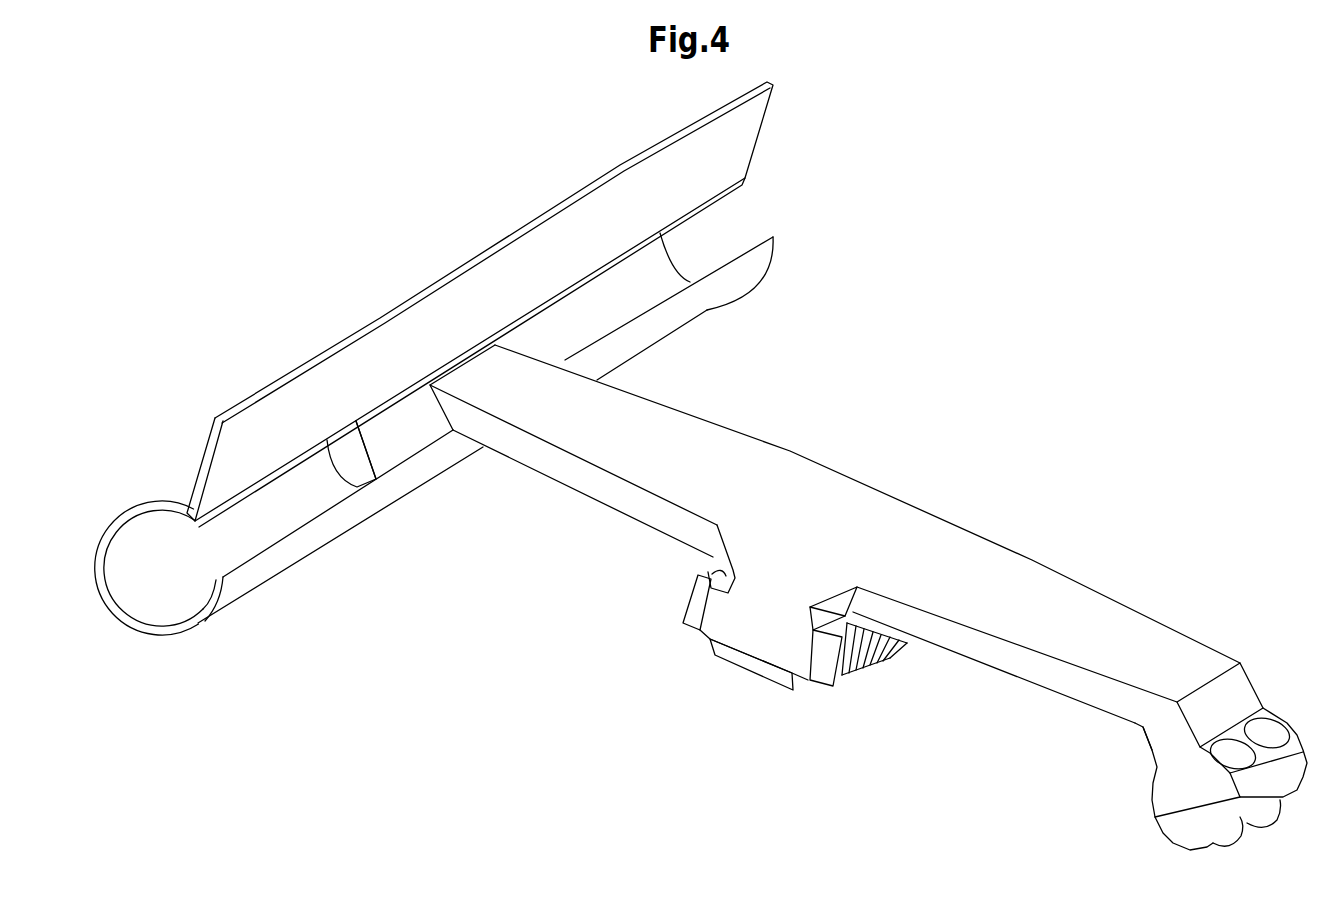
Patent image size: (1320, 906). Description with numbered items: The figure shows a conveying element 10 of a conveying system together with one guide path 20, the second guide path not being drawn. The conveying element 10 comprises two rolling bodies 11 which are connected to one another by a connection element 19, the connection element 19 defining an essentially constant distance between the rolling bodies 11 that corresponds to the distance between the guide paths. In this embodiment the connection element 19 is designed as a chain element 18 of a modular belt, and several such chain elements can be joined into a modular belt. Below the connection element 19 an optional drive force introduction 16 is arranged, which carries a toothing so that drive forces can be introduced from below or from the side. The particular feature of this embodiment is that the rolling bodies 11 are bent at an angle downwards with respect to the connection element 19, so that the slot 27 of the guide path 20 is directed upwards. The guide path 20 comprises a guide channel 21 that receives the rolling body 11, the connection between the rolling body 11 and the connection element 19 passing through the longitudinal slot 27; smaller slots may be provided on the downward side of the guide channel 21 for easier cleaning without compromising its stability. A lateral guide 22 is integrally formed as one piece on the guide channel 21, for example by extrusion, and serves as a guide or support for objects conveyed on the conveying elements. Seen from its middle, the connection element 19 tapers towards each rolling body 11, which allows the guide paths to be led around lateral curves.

The conveying element 10 is at (1020, 438).
The rolling body 11 is at (385, 460).
The drive force introduction 16 is at (753, 638).
The chain element 18 is at (868, 597).
The connection element 19 is at (813, 478).
The guide path 20 is at (788, 177).
The guide channel 21 is at (142, 595).
The lateral guide 22 is at (213, 441).
The slot 27 is at (778, 208).